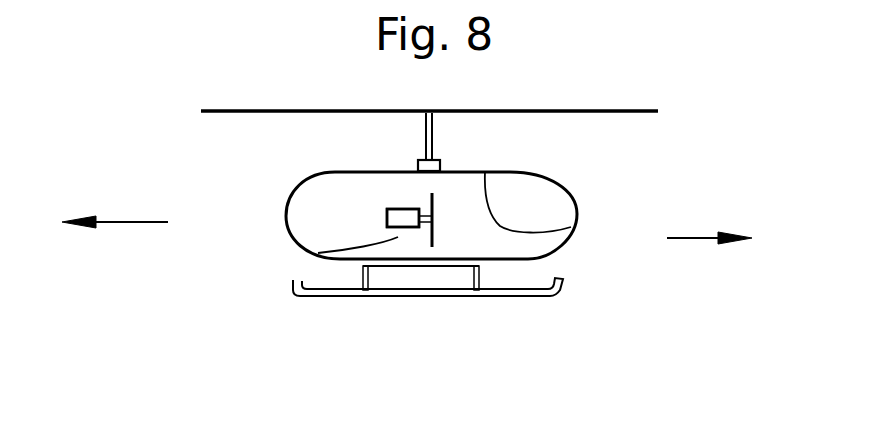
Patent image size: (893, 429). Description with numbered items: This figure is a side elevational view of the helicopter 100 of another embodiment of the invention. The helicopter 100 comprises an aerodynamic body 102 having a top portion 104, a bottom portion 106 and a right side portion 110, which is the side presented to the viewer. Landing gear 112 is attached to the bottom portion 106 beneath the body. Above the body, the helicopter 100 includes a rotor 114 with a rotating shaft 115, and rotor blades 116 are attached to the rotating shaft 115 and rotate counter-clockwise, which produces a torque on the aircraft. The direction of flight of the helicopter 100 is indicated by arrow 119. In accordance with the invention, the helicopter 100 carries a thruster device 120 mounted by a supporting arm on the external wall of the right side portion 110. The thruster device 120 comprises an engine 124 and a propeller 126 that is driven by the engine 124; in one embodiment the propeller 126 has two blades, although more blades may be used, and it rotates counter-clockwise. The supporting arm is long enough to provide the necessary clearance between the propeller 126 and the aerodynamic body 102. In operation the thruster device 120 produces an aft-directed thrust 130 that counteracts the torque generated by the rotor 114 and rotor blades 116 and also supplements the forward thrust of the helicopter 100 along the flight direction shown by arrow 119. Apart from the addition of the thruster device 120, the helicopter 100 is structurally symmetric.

The helicopter 100 is at (688, 137).
The aerodynamic body 102 is at (286, 214).
The top portion 104 is at (455, 172).
The bottom portion 106 is at (363, 266).
The right side portion 110 is at (318, 253).
The landing gear 112 is at (450, 296).
The rotor 114 is at (418, 165).
The rotating shaft 115 is at (433, 126).
The rotor blades 116 is at (508, 111).
The arrow indicating direction of flight 119 is at (700, 238).
The thruster device 120 is at (389, 224).
The engine 124 is at (403, 209).
The propeller 126 is at (434, 224).
The aft-directed thrust 130 is at (127, 222).